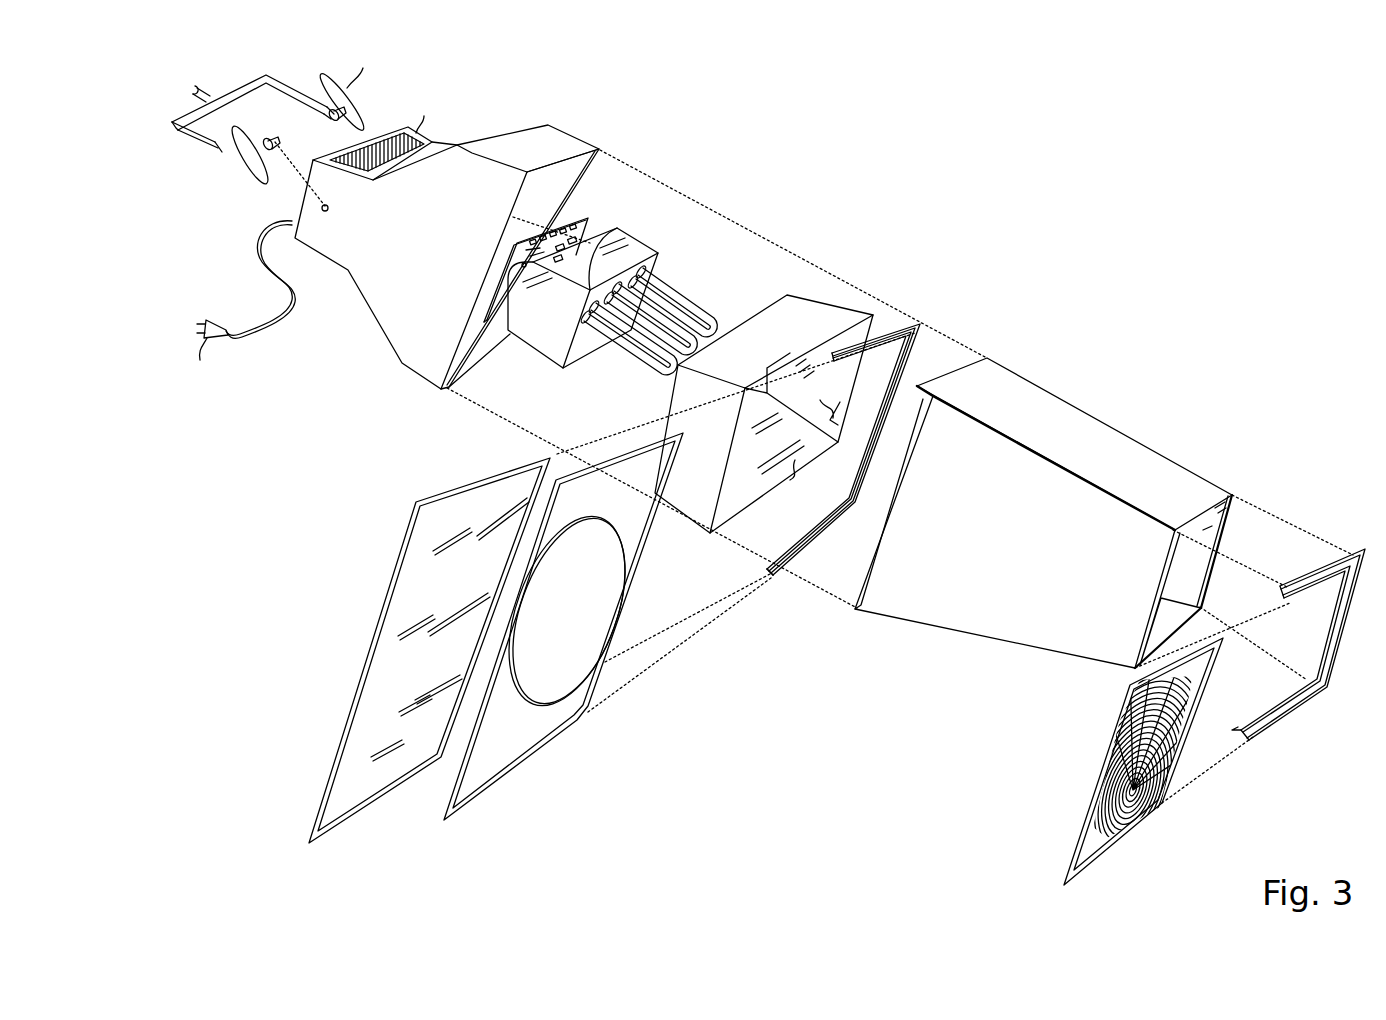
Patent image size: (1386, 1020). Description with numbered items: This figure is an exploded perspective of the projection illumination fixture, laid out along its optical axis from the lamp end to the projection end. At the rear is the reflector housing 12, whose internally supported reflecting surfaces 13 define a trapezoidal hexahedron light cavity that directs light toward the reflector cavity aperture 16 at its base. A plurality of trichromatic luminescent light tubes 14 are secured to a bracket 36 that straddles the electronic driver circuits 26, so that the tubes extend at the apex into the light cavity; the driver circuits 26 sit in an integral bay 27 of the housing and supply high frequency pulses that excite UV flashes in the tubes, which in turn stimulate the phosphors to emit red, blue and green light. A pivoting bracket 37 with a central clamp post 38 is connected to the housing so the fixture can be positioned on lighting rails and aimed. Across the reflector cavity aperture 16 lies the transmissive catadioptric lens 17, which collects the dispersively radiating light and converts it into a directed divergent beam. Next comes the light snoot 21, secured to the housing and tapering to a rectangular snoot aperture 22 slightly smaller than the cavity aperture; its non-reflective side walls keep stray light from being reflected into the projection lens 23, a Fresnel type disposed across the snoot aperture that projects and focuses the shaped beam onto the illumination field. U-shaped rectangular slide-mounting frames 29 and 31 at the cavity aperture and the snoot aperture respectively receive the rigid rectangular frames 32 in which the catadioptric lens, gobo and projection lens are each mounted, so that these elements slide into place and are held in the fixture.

The reflector housing 12 is at (557, 142).
The reflecting surfaces 13 is at (848, 333).
The trichromatic luminescent light tubes 14 is at (690, 293).
The reflector cavity aperture 16 is at (905, 323).
The transmissive catadioptric lens 17 is at (349, 783).
The light snoot 21 is at (1085, 432).
The snoot aperture 22 is at (1203, 530).
The projection lens 23 is at (1160, 804).
The electronic driver circuits 26 is at (590, 220).
The integral bay 27 is at (323, 245).
The U-shaped rectangular slide-mounting frame 29 is at (772, 582).
The U-shaped rectangular slide-mounting frame 31 is at (1292, 716).
The rigid rectangular frames 32 is at (1120, 838).
The bracket 36 is at (645, 248).
The pivoting bracket 37 is at (182, 130).
The central clamp post 38 is at (493, 748).